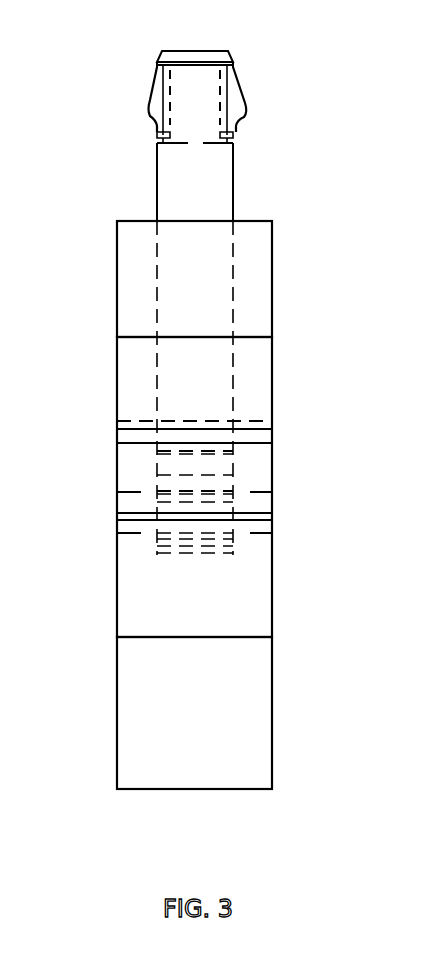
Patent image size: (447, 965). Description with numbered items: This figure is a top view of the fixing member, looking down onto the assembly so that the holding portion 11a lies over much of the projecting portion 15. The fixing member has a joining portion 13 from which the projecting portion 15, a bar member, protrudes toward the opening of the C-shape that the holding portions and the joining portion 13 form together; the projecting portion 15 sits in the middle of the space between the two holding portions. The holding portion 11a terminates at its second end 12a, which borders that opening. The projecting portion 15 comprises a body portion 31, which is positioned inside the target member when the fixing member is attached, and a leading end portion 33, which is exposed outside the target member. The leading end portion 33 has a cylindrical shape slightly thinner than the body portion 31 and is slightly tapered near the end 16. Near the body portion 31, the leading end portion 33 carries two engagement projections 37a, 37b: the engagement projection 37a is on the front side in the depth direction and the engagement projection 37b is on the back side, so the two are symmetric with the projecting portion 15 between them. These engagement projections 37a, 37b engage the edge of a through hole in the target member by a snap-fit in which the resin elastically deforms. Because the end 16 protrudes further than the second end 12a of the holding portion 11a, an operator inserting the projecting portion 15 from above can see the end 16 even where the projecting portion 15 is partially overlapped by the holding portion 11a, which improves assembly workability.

The end 16 is at (196, 52).
The leading end portion 33 is at (231, 63).
The engagement projection 37a is at (150, 106).
The engagement projection 37b is at (239, 114).
The body portion 31 is at (233, 155).
The projecting portion 15 is at (213, 190).
The second end 12a is at (140, 219).
The holding portion 11a is at (242, 596).
The joining portion 13 is at (242, 752).